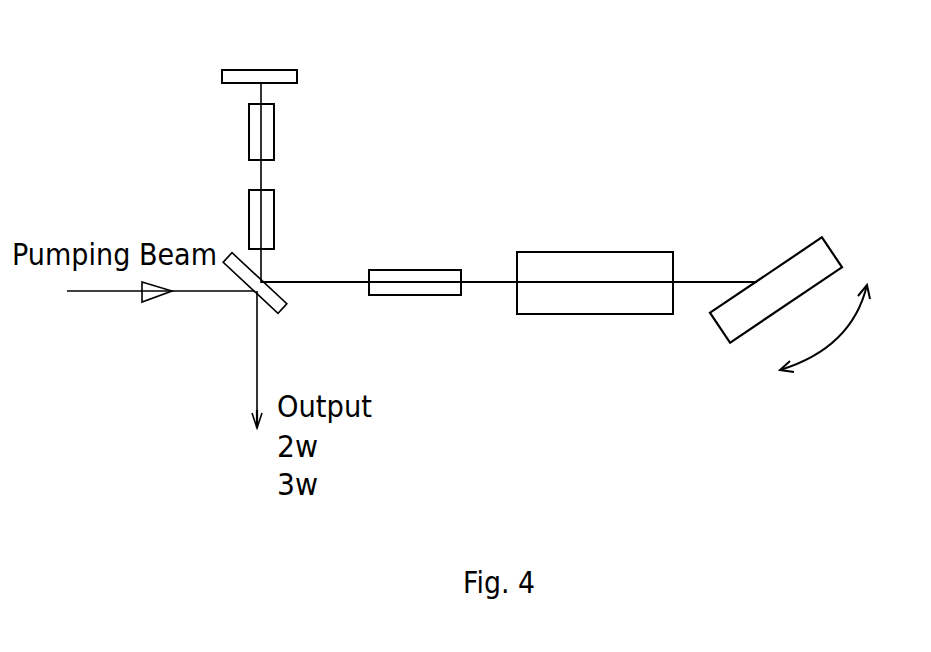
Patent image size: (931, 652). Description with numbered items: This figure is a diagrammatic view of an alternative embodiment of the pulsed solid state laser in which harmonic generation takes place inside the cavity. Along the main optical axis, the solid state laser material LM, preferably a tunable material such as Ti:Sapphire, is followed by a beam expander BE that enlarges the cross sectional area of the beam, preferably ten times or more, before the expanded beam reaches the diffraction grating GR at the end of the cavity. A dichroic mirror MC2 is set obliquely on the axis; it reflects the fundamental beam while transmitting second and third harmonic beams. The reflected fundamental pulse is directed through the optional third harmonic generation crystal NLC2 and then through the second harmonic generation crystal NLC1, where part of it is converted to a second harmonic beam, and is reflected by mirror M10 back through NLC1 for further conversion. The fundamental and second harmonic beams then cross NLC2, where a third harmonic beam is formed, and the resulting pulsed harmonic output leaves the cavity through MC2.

The mirror M10 is at (307, 84).
The second harmonic generation crystal NLC1 is at (199, 132).
The third harmonic generation crystal NLC2 is at (199, 217).
The dichroic mirror MC2 is at (281, 302).
The laser material LM is at (412, 250).
The beam expander BE is at (595, 259).
The diffraction grating GR is at (790, 278).